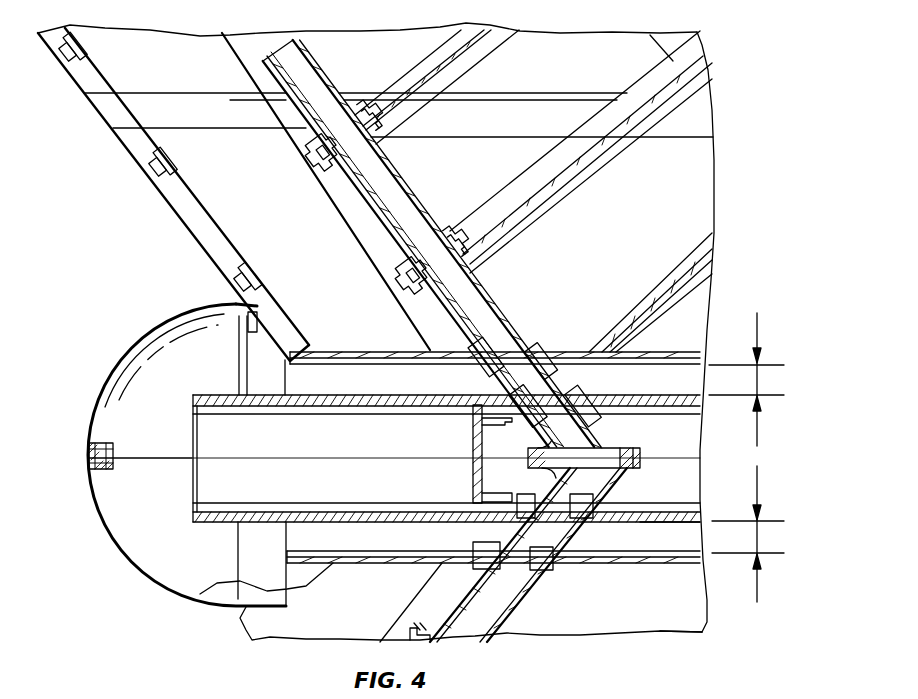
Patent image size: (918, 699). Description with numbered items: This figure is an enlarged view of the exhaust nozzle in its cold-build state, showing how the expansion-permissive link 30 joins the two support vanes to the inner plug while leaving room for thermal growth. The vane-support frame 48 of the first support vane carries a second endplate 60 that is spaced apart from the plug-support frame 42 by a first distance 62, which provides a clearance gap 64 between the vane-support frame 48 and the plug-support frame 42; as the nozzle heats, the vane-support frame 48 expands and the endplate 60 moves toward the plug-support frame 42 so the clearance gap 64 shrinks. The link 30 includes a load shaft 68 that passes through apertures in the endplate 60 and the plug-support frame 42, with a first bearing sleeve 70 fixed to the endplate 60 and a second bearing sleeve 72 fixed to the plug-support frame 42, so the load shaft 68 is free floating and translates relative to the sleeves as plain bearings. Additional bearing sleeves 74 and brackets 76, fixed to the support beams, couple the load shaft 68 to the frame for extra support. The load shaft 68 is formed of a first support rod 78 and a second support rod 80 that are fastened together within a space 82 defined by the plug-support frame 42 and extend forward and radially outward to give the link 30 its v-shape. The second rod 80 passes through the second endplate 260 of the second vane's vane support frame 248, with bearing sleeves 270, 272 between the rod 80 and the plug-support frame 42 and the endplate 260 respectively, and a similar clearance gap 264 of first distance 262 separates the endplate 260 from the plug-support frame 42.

The expansion-permissive link 30 is at (518, 604).
The plug-support frame 42 is at (210, 384).
The vane-support frame 48 is at (602, 80).
The second endplate 60 is at (385, 350).
The first distance 62 is at (762, 320).
The clearance gap 64 is at (709, 333).
The load shaft 68 is at (364, 212).
The first bearing sleeve 70 is at (535, 346).
The second bearing sleeve 72 is at (666, 379).
The additional bearing sleeve 74 is at (350, 104).
The bracket 76 is at (377, 94).
The first support rod 78 is at (490, 291).
The second support rod 80 is at (463, 593).
The space 82 is at (496, 441).
The vane support frame 248 is at (688, 636).
The second endplate 260 is at (210, 597).
The first distance 262 is at (762, 593).
The clearance gap 264 is at (663, 543).
The bearing sleeve 270 is at (562, 586).
The bearing sleeve 272 is at (525, 497).